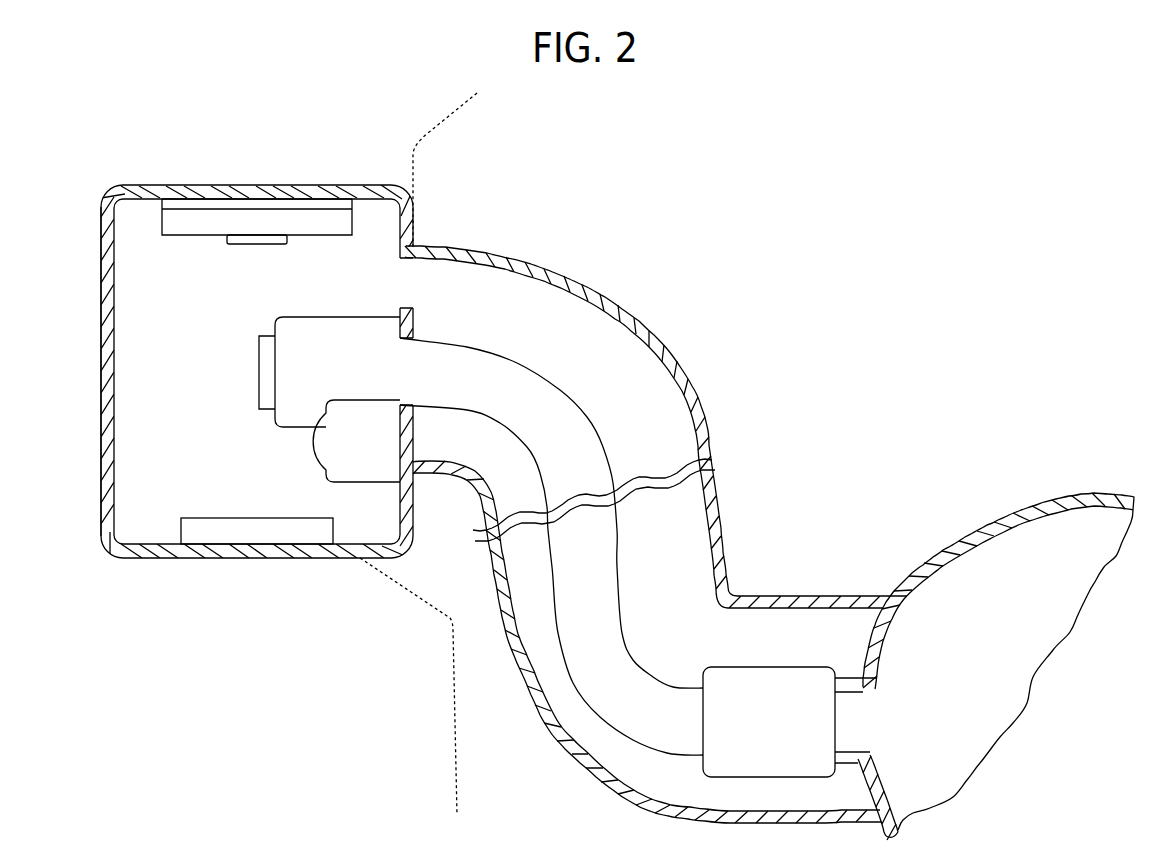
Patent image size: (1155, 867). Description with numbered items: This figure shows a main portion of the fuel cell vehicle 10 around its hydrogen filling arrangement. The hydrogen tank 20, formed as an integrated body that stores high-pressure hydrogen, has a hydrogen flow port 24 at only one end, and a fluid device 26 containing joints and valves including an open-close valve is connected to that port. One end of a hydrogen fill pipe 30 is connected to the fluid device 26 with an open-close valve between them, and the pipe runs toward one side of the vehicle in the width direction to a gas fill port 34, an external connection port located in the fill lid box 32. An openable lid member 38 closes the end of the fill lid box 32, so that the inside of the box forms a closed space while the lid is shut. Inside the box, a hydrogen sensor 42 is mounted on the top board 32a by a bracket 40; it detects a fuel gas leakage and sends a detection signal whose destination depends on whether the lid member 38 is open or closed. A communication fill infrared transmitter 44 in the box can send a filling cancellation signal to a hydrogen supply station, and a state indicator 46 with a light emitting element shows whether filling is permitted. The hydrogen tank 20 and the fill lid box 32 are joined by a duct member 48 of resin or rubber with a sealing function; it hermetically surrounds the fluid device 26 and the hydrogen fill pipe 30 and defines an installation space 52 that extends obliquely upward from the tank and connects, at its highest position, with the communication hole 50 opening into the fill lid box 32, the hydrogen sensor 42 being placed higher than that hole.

The fuel cell vehicle 10 is at (246, 145).
The hydrogen tank 20 is at (1033, 497).
The hydrogen flow port 24 is at (850, 746).
The fluid device 26 is at (737, 667).
The hydrogen fill pipe 30 is at (580, 401).
The fill lid box 32 is at (112, 555).
The top board 32a is at (217, 203).
The gas fill port 34 is at (283, 382).
The lid member 38 is at (106, 433).
The bracket 40 is at (320, 204).
The hydrogen sensor 42 is at (303, 229).
The communication fill infrared transmitter 44 is at (360, 408).
The state indicator 46 is at (248, 525).
The duct member 48 is at (809, 594).
The communication hole 50 is at (407, 283).
The installation space 52 is at (513, 292).